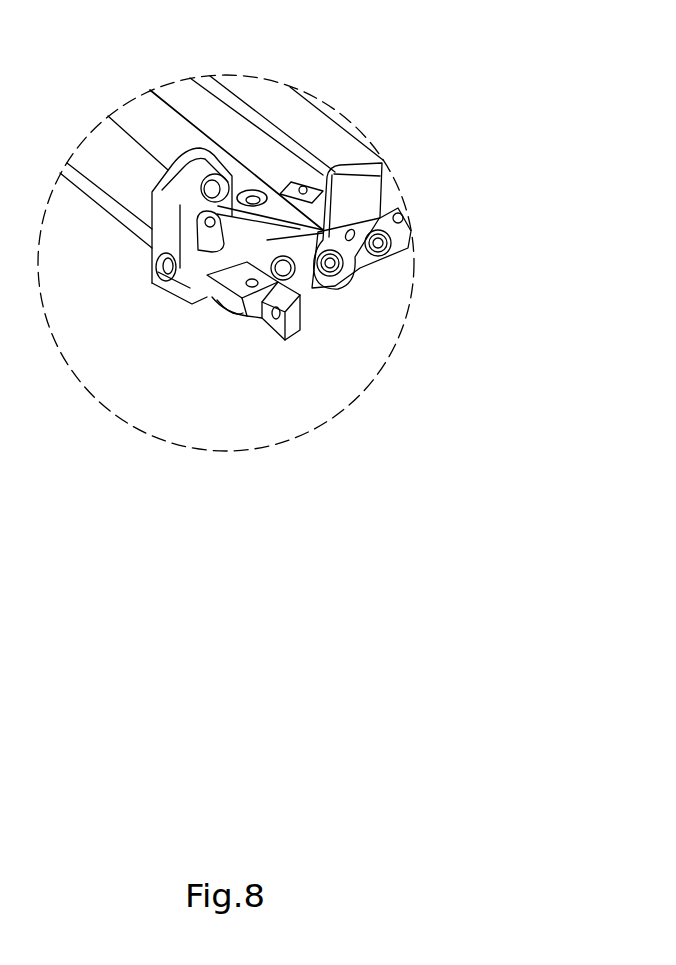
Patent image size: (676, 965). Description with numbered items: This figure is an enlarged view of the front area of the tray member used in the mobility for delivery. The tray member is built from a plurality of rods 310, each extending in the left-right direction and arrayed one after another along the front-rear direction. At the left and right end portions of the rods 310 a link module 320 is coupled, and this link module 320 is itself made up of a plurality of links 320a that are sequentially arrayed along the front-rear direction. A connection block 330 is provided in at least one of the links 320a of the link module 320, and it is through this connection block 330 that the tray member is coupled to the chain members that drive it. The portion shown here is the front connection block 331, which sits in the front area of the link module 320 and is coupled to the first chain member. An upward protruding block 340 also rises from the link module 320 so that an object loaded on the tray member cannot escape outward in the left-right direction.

The rod 310 is at (225, 130).
The link module 320 is at (517, 289).
The link 320a is at (403, 240).
The connection block 330 is at (257, 520).
The front connection block 331 is at (258, 300).
The upward protruding block 340 is at (363, 208).